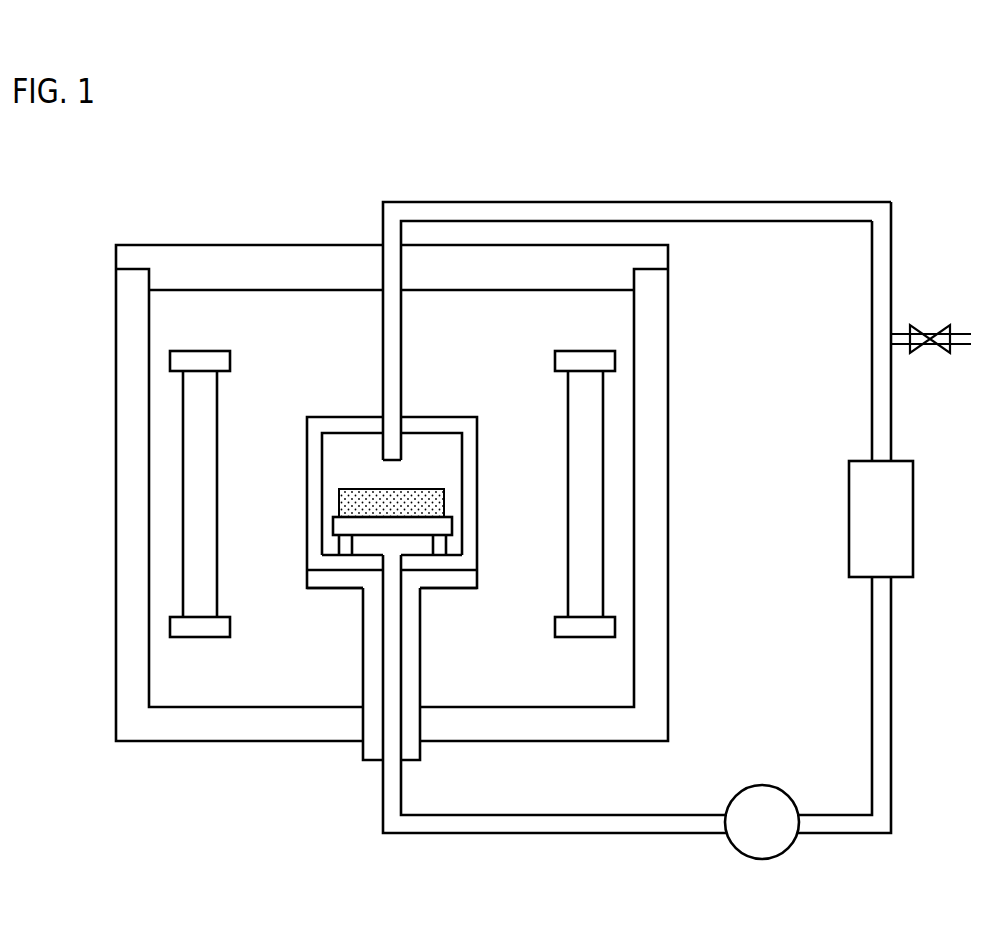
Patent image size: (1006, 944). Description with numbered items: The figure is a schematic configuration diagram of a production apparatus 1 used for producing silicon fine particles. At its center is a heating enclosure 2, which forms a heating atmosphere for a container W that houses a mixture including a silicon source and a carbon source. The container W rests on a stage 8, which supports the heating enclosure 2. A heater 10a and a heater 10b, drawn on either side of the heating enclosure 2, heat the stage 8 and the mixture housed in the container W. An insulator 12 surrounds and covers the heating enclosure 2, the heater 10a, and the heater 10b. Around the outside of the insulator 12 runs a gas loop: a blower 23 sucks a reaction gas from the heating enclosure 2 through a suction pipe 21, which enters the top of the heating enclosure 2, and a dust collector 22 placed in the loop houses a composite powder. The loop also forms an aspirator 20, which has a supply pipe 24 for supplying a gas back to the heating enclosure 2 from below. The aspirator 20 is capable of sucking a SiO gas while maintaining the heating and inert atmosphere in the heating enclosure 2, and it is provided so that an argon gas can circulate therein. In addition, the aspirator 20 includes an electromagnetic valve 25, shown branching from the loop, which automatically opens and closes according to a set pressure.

The production apparatus 1 is at (952, 203).
The heating enclosure 2 is at (298, 410).
The stage 8 is at (443, 577).
The heater 10a is at (200, 557).
The heater 10b is at (581, 424).
The insulator 12 is at (96, 246).
The aspirator 20 is at (885, 283).
The suction pipe 21 is at (495, 210).
The dust collector 22 is at (905, 513).
The blower 23 is at (762, 802).
The supply pipe 24 is at (455, 833).
The electromagnetic valve 25 is at (918, 350).
The container W is at (427, 505).